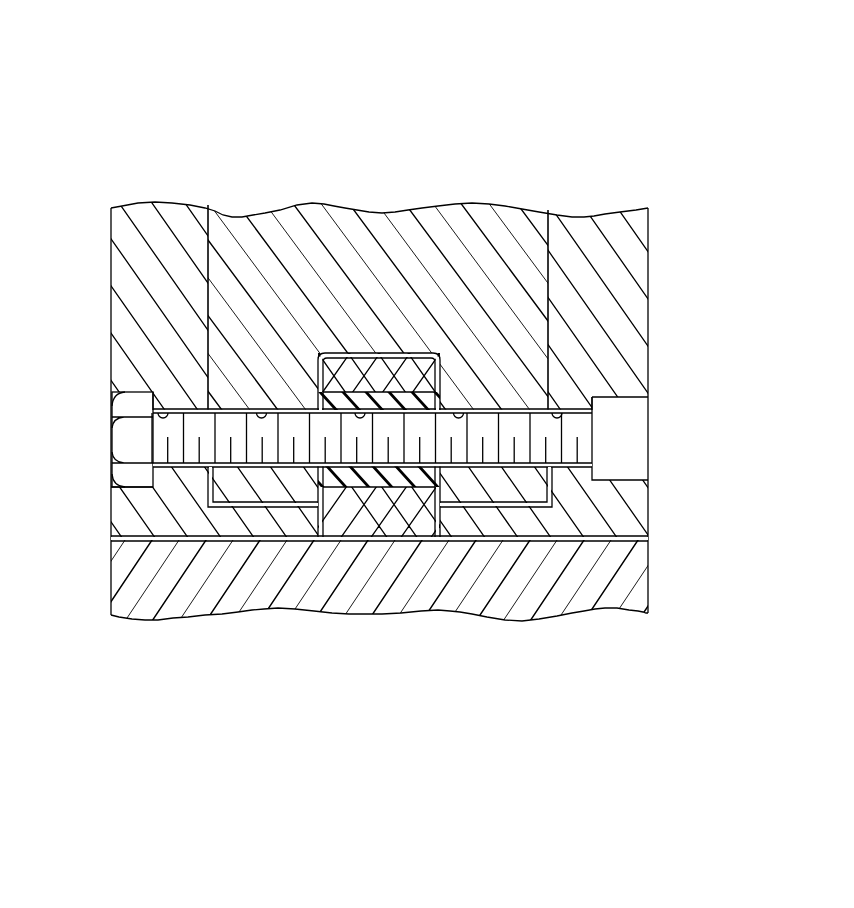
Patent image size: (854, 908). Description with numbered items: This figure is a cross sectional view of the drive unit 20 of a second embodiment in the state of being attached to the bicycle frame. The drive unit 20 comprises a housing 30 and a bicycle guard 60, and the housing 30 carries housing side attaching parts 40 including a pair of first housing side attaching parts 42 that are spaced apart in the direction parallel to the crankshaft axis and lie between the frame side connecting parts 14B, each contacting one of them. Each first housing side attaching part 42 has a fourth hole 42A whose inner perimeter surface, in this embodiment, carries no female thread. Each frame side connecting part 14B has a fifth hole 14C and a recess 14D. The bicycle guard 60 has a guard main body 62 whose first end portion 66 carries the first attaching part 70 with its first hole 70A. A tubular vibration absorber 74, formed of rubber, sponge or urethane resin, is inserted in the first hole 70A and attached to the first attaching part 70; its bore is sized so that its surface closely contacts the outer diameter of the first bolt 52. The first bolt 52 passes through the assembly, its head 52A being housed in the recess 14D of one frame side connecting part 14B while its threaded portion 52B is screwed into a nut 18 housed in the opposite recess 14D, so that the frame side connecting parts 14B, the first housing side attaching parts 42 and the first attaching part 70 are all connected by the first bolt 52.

The drive unit 20 is at (206, 58).
The housing 30 is at (393, 105).
The housing side attaching parts 40 is at (416, 158).
The first housing side attaching parts 42 is at (293, 317).
The fourth hole 42A is at (255, 413).
The frame side connecting parts 14B is at (120, 282).
The fifth hole 14C is at (150, 392).
The recess 14D is at (128, 488).
The nut 18 is at (128, 435).
The first bolt 52 is at (178, 468).
The head 52A is at (648, 451).
The threaded portion 52B is at (348, 455).
The bicycle guard 60 is at (600, 628).
The guard main body 62 is at (203, 609).
The first end portion 66 is at (276, 606).
The first attaching part 70 is at (388, 352).
The first hole 70A is at (408, 392).
The vibration absorber 74 is at (357, 392).